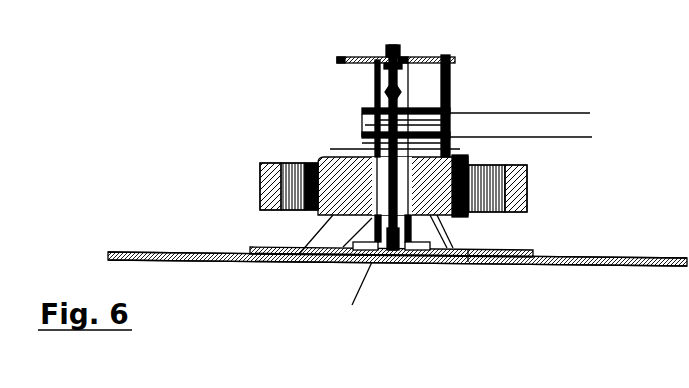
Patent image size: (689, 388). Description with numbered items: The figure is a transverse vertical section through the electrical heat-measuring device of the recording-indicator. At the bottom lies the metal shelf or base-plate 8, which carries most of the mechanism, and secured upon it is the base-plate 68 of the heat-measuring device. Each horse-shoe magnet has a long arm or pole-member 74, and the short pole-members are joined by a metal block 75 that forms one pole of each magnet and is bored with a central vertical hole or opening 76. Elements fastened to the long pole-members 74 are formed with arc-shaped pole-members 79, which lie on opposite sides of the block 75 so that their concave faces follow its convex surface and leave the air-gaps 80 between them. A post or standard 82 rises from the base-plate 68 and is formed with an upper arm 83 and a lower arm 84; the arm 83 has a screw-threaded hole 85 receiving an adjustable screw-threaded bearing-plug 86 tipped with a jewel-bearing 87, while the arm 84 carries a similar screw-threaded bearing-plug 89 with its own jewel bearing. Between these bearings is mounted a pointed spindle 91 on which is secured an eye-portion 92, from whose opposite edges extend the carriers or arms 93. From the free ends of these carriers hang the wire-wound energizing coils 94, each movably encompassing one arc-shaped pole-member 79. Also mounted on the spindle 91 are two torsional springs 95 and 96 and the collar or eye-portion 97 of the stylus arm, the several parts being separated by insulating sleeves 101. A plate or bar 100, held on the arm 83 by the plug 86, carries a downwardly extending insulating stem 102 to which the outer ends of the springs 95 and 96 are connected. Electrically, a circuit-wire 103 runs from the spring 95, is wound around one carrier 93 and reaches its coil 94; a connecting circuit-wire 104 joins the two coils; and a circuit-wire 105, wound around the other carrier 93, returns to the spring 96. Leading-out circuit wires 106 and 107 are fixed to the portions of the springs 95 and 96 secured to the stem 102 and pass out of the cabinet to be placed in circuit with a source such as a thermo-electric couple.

The shelf or base-plate 8 is at (634, 258).
The base-plate 68 is at (533, 256).
The long arm or pole-member 74 is at (258, 167).
The metal block 75 is at (468, 265).
The hole or opening 76 is at (332, 262).
The arc-shaped pole-member 79 is at (316, 190).
The air-gap 80 is at (287, 262).
The post or standard 82 is at (455, 58).
The arm 83 is at (380, 66).
The arm 84 is at (355, 297).
The screw-threaded hole 85 is at (405, 60).
The screw-threaded bearing-plug 86 is at (393, 50).
The jewel-bearing 87 is at (413, 72).
The screw-threaded bearing-plug 89 is at (375, 255).
The spindle 91 is at (363, 214).
The eye-portion 92 is at (437, 265).
The carrier or arm 93 is at (366, 125).
The energizing coil 94 is at (317, 213).
The torsional spring 95 is at (370, 136).
The torsional spring 96 is at (387, 93).
The collar or eye-portion 97 is at (385, 90).
The plate or bar 100 is at (470, 48).
The insulating sleeve 101 is at (462, 96).
The stem 102 is at (420, 85).
The circuit-wire 103 is at (460, 268).
The connecting circuit-wire 104 is at (325, 155).
The circuit-wire 105 is at (363, 111).
The leading-out circuit wire 106 is at (586, 138).
The leading-out circuit wire 107 is at (565, 104).